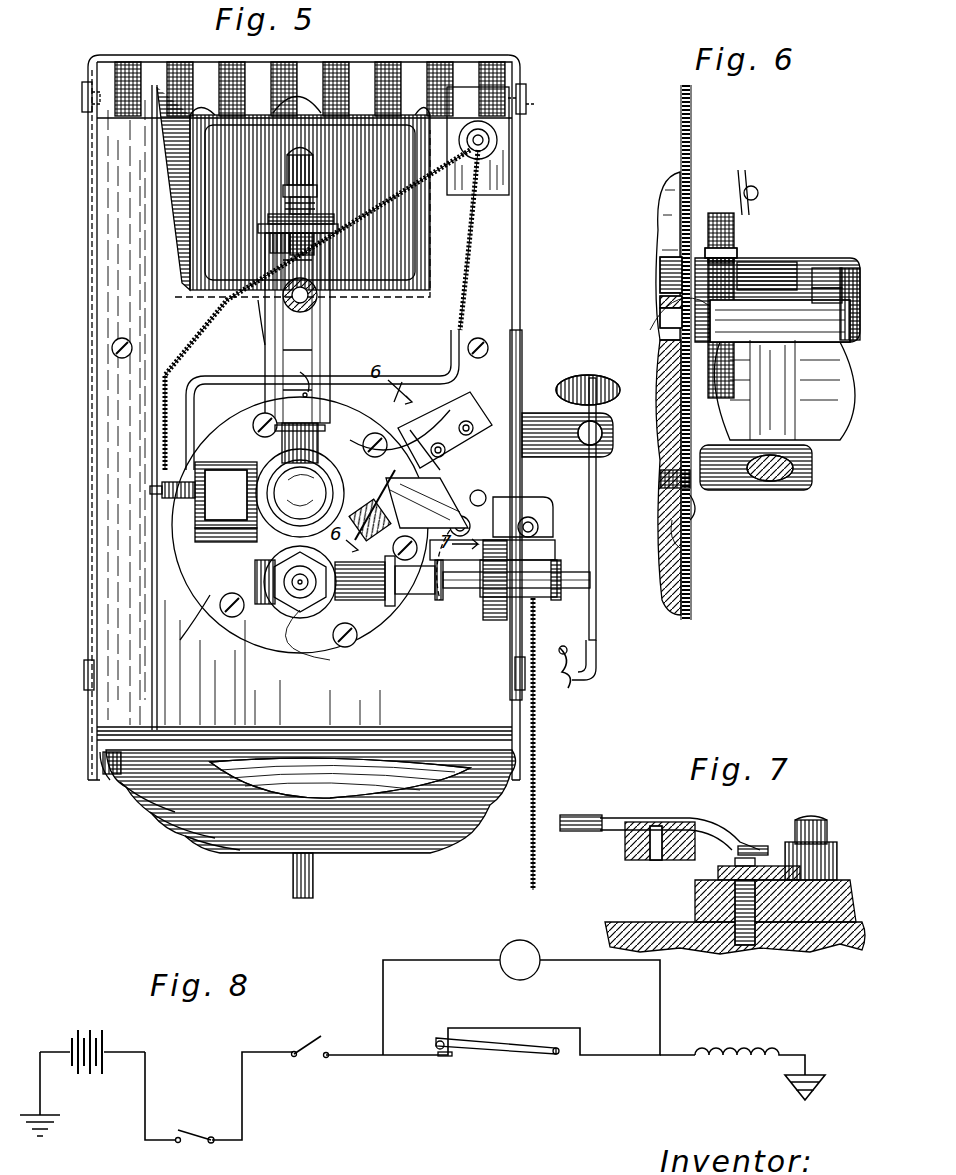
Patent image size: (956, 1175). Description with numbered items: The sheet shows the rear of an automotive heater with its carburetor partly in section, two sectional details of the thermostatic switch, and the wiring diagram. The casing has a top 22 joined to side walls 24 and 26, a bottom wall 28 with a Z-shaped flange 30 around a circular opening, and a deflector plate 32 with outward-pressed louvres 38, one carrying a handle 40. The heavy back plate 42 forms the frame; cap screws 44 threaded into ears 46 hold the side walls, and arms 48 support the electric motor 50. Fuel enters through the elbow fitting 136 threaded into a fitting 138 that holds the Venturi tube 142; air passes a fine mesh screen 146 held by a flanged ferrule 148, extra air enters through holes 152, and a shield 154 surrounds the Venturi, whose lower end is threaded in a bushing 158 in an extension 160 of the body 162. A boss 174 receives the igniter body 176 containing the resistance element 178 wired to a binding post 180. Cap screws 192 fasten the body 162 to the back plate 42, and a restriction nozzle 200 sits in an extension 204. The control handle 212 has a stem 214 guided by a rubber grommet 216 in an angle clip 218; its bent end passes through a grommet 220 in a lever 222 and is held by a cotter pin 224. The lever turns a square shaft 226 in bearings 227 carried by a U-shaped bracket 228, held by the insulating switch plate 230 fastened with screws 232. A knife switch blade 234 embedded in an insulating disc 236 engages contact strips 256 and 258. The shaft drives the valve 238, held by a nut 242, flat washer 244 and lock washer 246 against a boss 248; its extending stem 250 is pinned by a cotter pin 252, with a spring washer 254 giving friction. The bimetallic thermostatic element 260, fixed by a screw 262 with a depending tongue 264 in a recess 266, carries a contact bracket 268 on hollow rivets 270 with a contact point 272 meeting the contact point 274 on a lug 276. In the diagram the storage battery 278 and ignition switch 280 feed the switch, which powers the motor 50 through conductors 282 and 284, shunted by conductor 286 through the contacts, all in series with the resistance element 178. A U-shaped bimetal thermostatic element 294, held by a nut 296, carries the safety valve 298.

In FIG. 5, the top 22 is at (166, 46).
In FIG. 5, the side wall 24 is at (514, 144).
In FIG. 5, the side wall 26 is at (90, 216).
In FIG. 5, the bottom wall 28 is at (105, 740).
In FIG. 5, the Z-shaped flange 30 is at (105, 766).
In FIG. 5, the deflector plate 32 is at (115, 784).
In FIG. 5, the louvres 38 is at (145, 800).
In FIG. 5, the handle 40 is at (293, 874).
In FIG. 5, the back plate 42 is at (110, 256).
In FIG. 5, the cap screws 44 is at (82, 88).
In FIG. 5, the ears 46 is at (82, 94).
In FIG. 5, the arms 48 is at (291, 223).
In FIG. 5, the electric motor 50 is at (196, 212).
In FIG. 8, the electric motor 50 is at (512, 940).
In FIG. 5, the elbow fitting 136 is at (330, 306).
In FIG. 5, the fitting 138 is at (265, 308).
In FIG. 5, the Venturi tube 142 is at (298, 340).
In FIG. 5, the fine mesh screen 146 is at (300, 246).
In FIG. 5, the flanged ferrule 148 is at (295, 260).
In FIG. 5, the holes 152 is at (300, 376).
In FIG. 5, the shield 154 is at (272, 230).
In FIG. 5, the bushing 158 is at (298, 436).
In FIG. 5, the extension 160 is at (300, 484).
In FIG. 5, the body 162 is at (210, 588).
In FIG. 6, the body 162 is at (682, 562).
In FIG. 7, the body 162 is at (795, 940).
In FIG. 5, the boss 174 is at (200, 530).
In FIG. 5, the igniter body 176 is at (200, 498).
In FIG. 8, the resistance element 178 is at (740, 1058).
In FIG. 5, the binding post 180 is at (165, 486).
In FIG. 5, the cap screws 192 is at (258, 414).
In FIG. 5, the restriction nozzle 200 is at (240, 634).
In FIG. 5, the extension 204 is at (285, 570).
In FIG. 5, the handle 212 is at (516, 388).
In FIG. 5, the stem 214 is at (597, 512).
In FIG. 5, the rubber grommet 216 is at (556, 425).
In FIG. 5, the angle clip 218 is at (516, 366).
In FIG. 5, the grommet 220 is at (598, 662).
In FIG. 5, the lever 222 is at (596, 634).
In FIG. 5, the cotter pin 224 is at (580, 682).
In FIG. 5, the square shaft 226 is at (560, 575).
In FIG. 5, the bearings 227 is at (425, 620).
In FIG. 6, the bearings 227 is at (810, 272).
In FIG. 5, the U-shaped bracket 228 is at (604, 566).
In FIG. 6, the U-shaped bracket 228 is at (808, 258).
In FIG. 5, the insulating switch plate 230 is at (546, 540).
In FIG. 6, the insulating switch plate 230 is at (666, 238).
In FIG. 7, the insulating switch plate 230 is at (738, 938).
In FIG. 5, the screws 232 is at (488, 618).
In FIG. 7, the screws 232 is at (695, 900).
In FIG. 5, the knife switch blade 234 is at (480, 625).
In FIG. 6, the knife switch blade 234 is at (752, 264).
In FIG. 8, the knife switch blade 234 is at (314, 1036).
In FIG. 5, the insulating disc 236 is at (496, 620).
In FIG. 6, the insulating disc 236 is at (848, 338).
In FIG. 8, the insulating disc 236 is at (266, 1056).
In FIG. 5, the valve 238 is at (378, 636).
In FIG. 5, the nut 242 is at (370, 616).
In FIG. 5, the flat washer 244 is at (325, 616).
In FIG. 5, the lock washer 246 is at (335, 620).
In FIG. 5, the boss 248 is at (300, 600).
In FIG. 5, the extending stem 250 is at (390, 606).
In FIG. 5, the cotter pin 252 is at (415, 580).
In FIG. 5, the spring washer 254 is at (438, 600).
In FIG. 5, the contact strip 256 is at (540, 500).
In FIG. 6, the contact strip 256 is at (835, 276).
In FIG. 5, the contact strip 258 is at (482, 490).
In FIG. 6, the contact strip 258 is at (836, 292).
In FIG. 8, the contact strip 258 is at (338, 1052).
In FIG. 5, the bimetallic thermostatic element 260 is at (420, 512).
In FIG. 6, the bimetallic thermostatic element 260 is at (700, 296).
In FIG. 8, the bimetallic thermostatic element 260 is at (528, 1052).
In FIG. 5, the screw 262 is at (394, 484).
In FIG. 6, the screw 262 is at (698, 486).
In FIG. 6, the depending tongue 264 is at (702, 516).
In FIG. 6, the recess 266 is at (695, 540).
In FIG. 5, the contact bracket 268 is at (445, 426).
In FIG. 6, the contact bracket 268 is at (738, 218).
In FIG. 7, the contact bracket 268 is at (730, 814).
In FIG. 5, the hollow rivets 270 is at (440, 450).
In FIG. 6, the hollow rivets 270 is at (738, 246).
In FIG. 7, the hollow rivets 270 is at (652, 828).
In FIG. 7, the contact point 272 is at (760, 836).
In FIG. 8, the contact point 272 is at (432, 1042).
In FIG. 6, the contact point 274 is at (670, 268).
In FIG. 7, the contact point 274 is at (720, 866).
In FIG. 8, the contact point 274 is at (452, 1056).
In FIG. 5, the lug 276 is at (410, 516).
In FIG. 6, the lug 276 is at (675, 300).
In FIG. 7, the lug 276 is at (730, 872).
In FIG. 8, the lug 276 is at (380, 1056).
In FIG. 8, the storage battery 278 is at (85, 1030).
In FIG. 8, the ignition switch 280 is at (200, 1124).
In FIG. 5, the conductor 282 is at (480, 188).
In FIG. 6, the conductor 282 is at (693, 112).
In FIG. 8, the conductor 282 is at (452, 962).
In FIG. 5, the conductor 284 is at (186, 378).
In FIG. 8, the conductor 284 is at (622, 962).
In FIG. 5, the conductor 286 is at (365, 430).
In FIG. 6, the conductor 286 is at (755, 186).
In FIG. 7, the conductor 286 is at (588, 814).
In FIG. 8, the conductor 286 is at (634, 1056).
In FIG. 5, the bimetal thermostatic element 294 is at (300, 166).
In FIG. 5, the nut 296 is at (290, 200).
In FIG. 5, the valve 298 is at (288, 174).